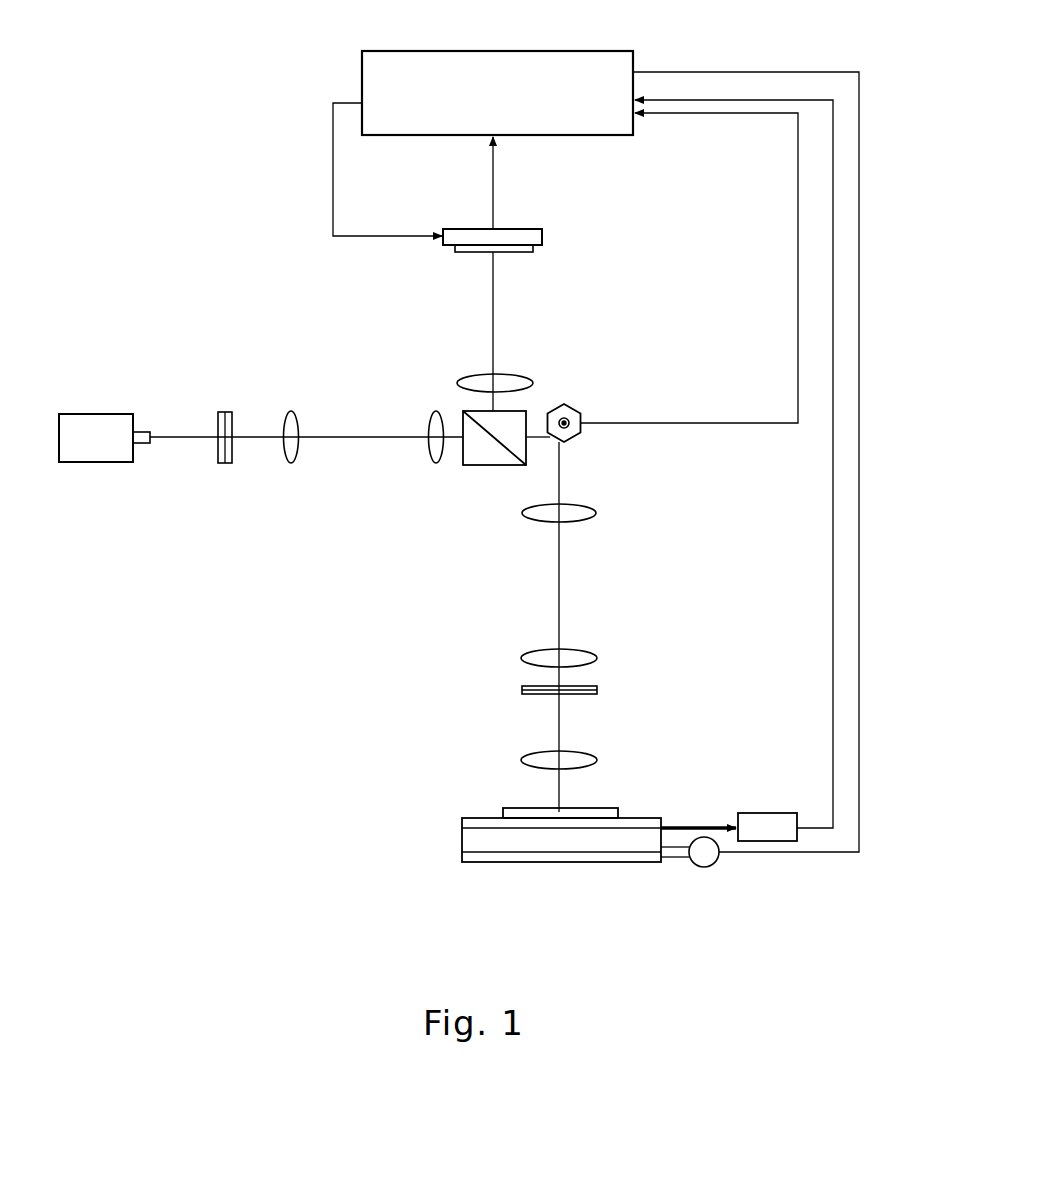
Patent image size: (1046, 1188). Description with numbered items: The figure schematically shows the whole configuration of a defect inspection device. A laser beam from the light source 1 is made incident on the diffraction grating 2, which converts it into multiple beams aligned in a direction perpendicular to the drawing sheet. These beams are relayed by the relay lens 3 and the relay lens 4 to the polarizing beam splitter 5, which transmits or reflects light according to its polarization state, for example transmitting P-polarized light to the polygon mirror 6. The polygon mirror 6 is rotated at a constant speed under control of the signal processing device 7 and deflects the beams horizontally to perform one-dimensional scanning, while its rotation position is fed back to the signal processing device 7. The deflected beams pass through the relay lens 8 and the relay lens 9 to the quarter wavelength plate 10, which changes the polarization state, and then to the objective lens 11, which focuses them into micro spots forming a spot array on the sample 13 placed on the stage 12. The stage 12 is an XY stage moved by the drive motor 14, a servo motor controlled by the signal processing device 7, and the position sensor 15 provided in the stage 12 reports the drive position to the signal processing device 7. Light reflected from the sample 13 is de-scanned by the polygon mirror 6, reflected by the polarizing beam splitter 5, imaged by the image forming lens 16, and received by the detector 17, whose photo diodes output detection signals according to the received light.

The light source 1 is at (93, 413).
The diffraction grating 2 is at (225, 411).
The relay lens 3 is at (292, 411).
The relay lens 4 is at (436, 411).
The polarizing beam splitter 5 is at (487, 468).
The polygon mirror 6 is at (578, 410).
The signal processing device 7 is at (382, 51).
The relay lens 8 is at (596, 513).
The relay lens 9 is at (597, 658).
The quarter wavelength plate 10 is at (597, 690).
The objective lens 11 is at (597, 760).
The stage 12 is at (482, 818).
The sample 13 is at (510, 808).
The drive motor 14 is at (716, 864).
The position sensor 15 is at (768, 813).
The image forming lens 16 is at (533, 383).
The detector 17 is at (542, 237).